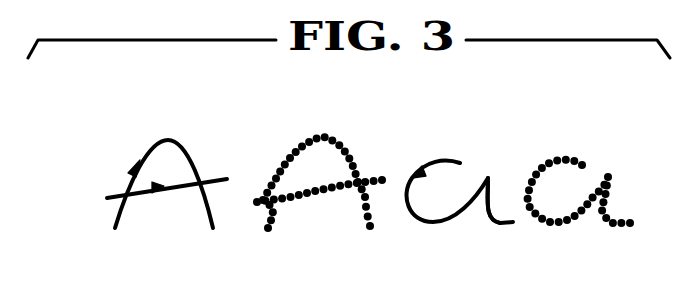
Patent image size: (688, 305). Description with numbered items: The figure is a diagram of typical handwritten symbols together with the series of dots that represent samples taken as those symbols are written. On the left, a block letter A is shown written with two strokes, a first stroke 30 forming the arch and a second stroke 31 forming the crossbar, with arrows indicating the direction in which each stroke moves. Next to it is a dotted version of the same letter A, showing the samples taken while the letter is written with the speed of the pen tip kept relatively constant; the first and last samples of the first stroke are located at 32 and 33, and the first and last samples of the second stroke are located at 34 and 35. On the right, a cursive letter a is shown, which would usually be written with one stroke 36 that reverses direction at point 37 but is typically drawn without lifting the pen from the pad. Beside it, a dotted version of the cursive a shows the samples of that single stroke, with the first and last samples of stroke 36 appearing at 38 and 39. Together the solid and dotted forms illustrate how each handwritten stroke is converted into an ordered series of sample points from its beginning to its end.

The first stroke 30 is at (115, 220).
The second stroke 31 is at (110, 197).
The first sample of first stroke 32 is at (267, 230).
The last sample of first stroke 33 is at (369, 229).
The first sample of second stroke 34 is at (268, 198).
The last sample of second stroke 35 is at (381, 183).
The stroke 36 is at (440, 160).
The reversal point 37 is at (493, 170).
The first sample of stroke 38 is at (582, 164).
The last sample of stroke 39 is at (632, 227).